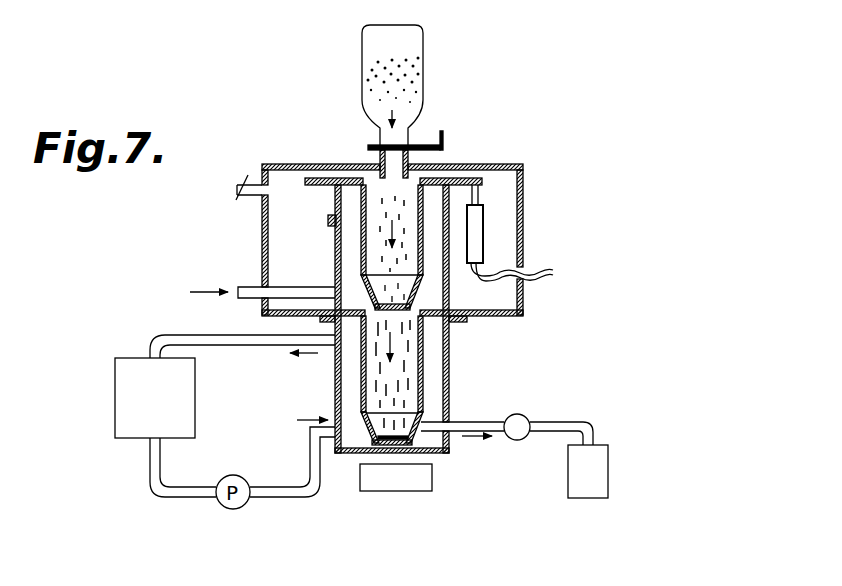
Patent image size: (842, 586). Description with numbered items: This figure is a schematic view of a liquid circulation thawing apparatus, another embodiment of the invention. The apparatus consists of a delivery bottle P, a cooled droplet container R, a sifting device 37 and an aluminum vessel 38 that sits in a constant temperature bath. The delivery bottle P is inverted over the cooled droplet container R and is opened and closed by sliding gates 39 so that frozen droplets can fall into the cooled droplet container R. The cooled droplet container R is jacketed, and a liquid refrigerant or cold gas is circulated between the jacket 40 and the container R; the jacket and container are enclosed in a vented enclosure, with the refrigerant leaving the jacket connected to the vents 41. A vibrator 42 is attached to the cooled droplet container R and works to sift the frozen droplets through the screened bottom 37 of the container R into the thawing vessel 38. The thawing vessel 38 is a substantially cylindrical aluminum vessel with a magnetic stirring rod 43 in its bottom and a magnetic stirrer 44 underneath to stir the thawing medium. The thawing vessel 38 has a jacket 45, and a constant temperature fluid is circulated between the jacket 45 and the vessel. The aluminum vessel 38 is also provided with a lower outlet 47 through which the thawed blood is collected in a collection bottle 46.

The delivery bottle P is at (378, 42).
The cooled droplet container R is at (380, 199).
The sifting device 37 is at (405, 305).
The aluminum vessel 38 is at (375, 377).
The sliding gates 39 is at (424, 143).
The jacket 40 is at (335, 247).
The vents 41 is at (240, 184).
The vibrator 42 is at (478, 225).
The magnetic stirring rod 43 is at (417, 441).
The magnetic stirrer 44 is at (379, 478).
The jacket 45 is at (450, 375).
The collection bottle 46 is at (597, 482).
The lower outlet 47 is at (428, 418).